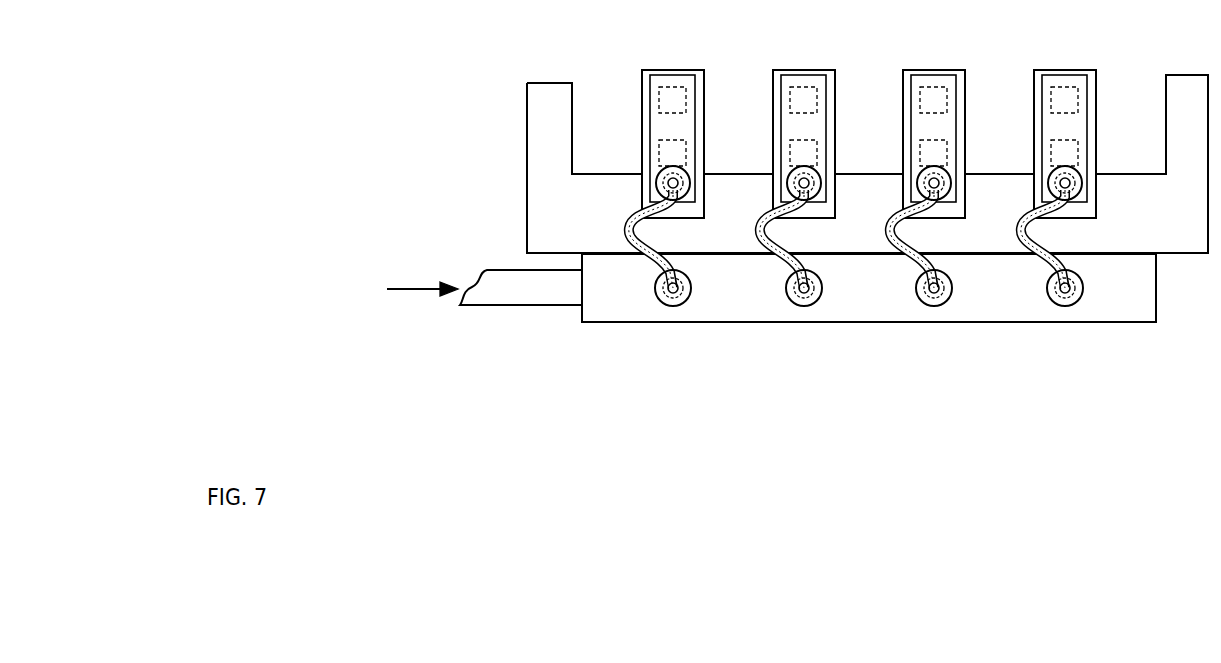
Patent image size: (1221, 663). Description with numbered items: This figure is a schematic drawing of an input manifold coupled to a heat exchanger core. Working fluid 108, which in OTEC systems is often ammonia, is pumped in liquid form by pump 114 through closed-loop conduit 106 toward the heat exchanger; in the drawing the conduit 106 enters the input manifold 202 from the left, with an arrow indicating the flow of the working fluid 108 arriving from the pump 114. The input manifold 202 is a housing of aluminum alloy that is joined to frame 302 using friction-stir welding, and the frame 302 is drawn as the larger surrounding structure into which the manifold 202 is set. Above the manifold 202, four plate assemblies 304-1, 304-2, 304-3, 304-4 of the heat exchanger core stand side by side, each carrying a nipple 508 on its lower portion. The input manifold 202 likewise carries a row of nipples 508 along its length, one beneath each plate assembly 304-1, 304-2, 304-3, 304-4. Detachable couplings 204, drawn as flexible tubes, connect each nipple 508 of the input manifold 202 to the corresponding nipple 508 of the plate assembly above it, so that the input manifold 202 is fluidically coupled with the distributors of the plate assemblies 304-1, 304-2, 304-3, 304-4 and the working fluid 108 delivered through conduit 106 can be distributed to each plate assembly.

The pump 114 is at (274, 288).
The working fluid 108 is at (403, 291).
The closed-loop conduit 106 is at (537, 298).
The frame 302 is at (570, 245).
The input manifold 202 is at (1157, 305).
The plate assembly 304-1 is at (670, 70).
The plate assembly 304-2 is at (801, 70).
The plate assembly 304-3 is at (931, 70).
The plate assembly 304-4 is at (1062, 70).
The detachable coupling 204 is at (628, 226).
The nipple 508 is at (657, 175).